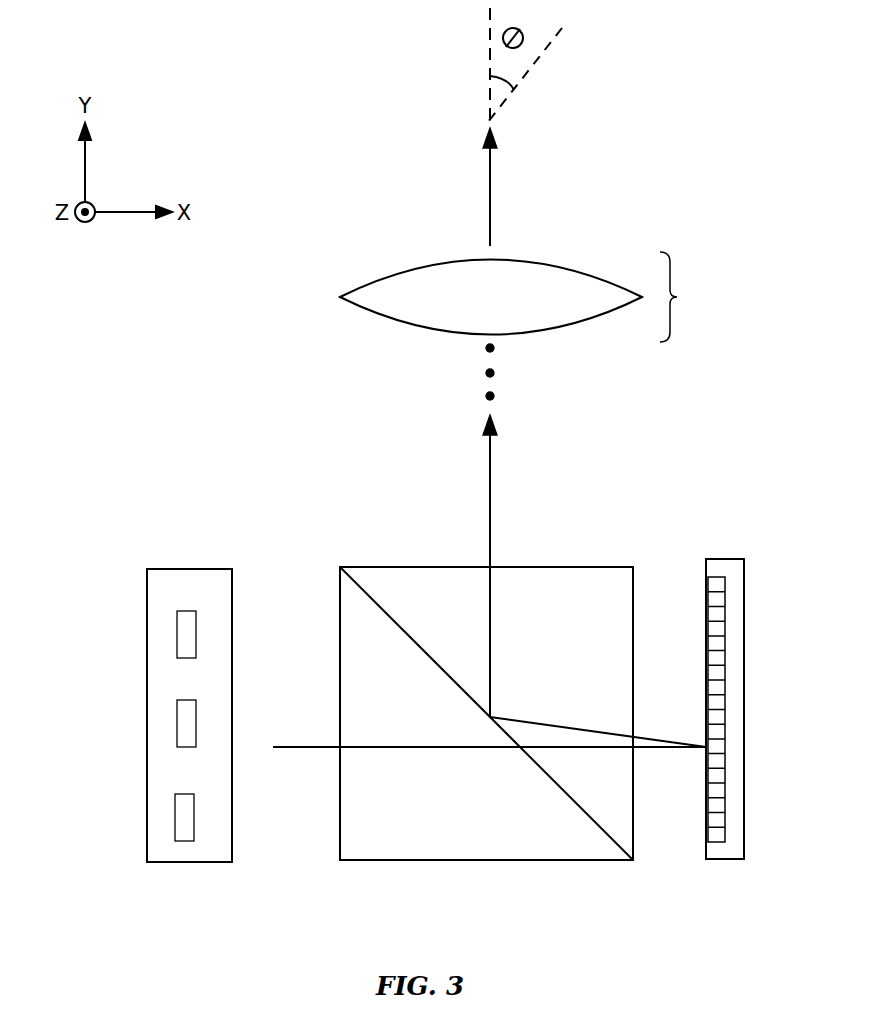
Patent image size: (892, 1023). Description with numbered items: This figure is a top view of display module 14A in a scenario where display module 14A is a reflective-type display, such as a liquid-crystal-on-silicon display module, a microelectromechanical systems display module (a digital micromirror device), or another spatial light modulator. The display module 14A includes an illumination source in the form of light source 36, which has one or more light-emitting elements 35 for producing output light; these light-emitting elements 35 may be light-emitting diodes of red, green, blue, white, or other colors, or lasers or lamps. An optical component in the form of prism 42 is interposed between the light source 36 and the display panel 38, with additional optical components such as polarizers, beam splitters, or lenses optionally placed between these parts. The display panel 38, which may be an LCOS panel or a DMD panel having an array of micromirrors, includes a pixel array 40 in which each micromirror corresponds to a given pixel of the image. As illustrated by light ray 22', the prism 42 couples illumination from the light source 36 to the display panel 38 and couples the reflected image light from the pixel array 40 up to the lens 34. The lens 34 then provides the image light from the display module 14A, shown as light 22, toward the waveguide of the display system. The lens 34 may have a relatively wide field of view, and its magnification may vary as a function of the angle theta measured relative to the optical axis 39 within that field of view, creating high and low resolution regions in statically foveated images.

The display module 14A is at (710, 396).
The light 22 is at (523, 187).
The light ray 22' is at (525, 566).
The lens 34 is at (526, 297).
The light-emitting elements 35 is at (177, 640).
The light source 36 is at (187, 569).
The display panel 38 is at (744, 763).
The optical axis 39 is at (490, 52).
The pixel array 40 is at (725, 660).
The prism 42 is at (480, 860).